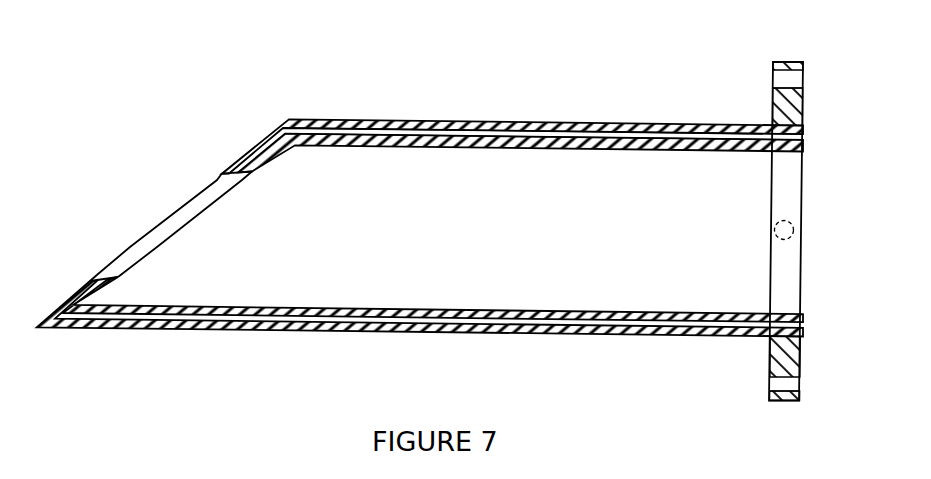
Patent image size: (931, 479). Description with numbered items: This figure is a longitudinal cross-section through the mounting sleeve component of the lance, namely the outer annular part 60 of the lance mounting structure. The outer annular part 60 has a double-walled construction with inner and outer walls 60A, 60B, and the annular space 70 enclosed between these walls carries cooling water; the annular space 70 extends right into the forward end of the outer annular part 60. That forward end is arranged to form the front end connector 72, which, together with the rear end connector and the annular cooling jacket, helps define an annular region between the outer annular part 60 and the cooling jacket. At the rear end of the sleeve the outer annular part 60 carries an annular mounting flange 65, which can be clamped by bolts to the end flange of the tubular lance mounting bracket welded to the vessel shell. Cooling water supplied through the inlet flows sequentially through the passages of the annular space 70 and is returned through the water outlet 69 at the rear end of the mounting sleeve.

The outer annular part 60 is at (420, 171).
The inner wall 60A is at (556, 123).
The outer wall 60B is at (657, 147).
The annular space 70 is at (457, 137).
The front end connector 72 is at (247, 155).
The annular mounting flange 65 is at (768, 355).
The water outlet 69 is at (775, 229).